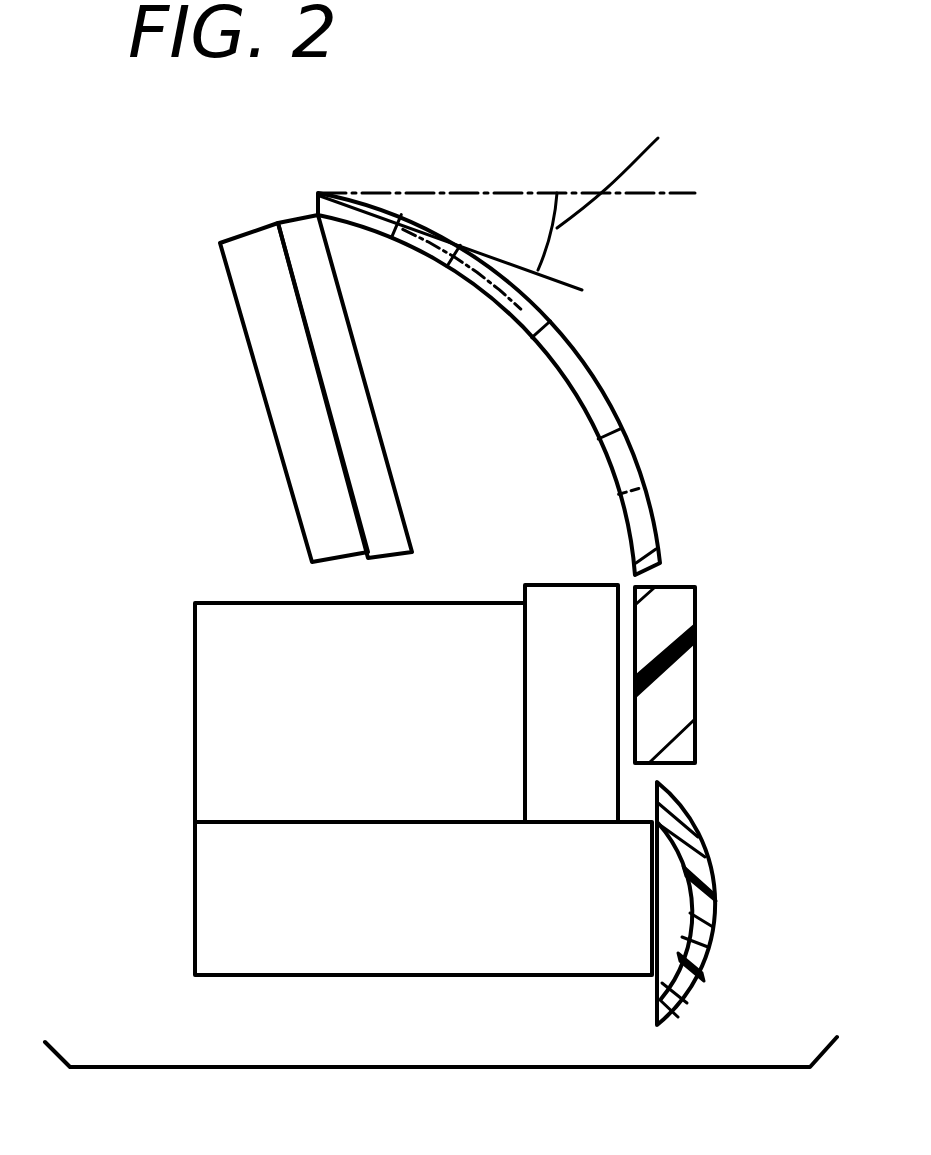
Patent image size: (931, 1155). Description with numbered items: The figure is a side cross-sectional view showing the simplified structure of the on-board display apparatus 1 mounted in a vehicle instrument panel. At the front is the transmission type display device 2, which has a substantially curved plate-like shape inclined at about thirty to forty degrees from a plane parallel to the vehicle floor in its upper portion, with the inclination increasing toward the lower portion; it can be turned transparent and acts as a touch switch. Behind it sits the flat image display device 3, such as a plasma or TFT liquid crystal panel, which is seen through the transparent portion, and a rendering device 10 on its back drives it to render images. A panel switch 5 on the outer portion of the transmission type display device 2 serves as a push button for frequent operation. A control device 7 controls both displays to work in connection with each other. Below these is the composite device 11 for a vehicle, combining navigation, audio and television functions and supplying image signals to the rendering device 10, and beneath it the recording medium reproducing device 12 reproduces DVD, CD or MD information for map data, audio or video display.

The on-board display apparatus 1 is at (482, 76).
The transmission type display device 2 is at (562, 357).
The image display device 3 is at (347, 400).
The panel switch 5 is at (672, 680).
The control device 7 is at (558, 593).
The rendering device 10 is at (293, 403).
The composite device for a vehicle 11 is at (223, 723).
The recording medium reproducing device 12 is at (225, 910).